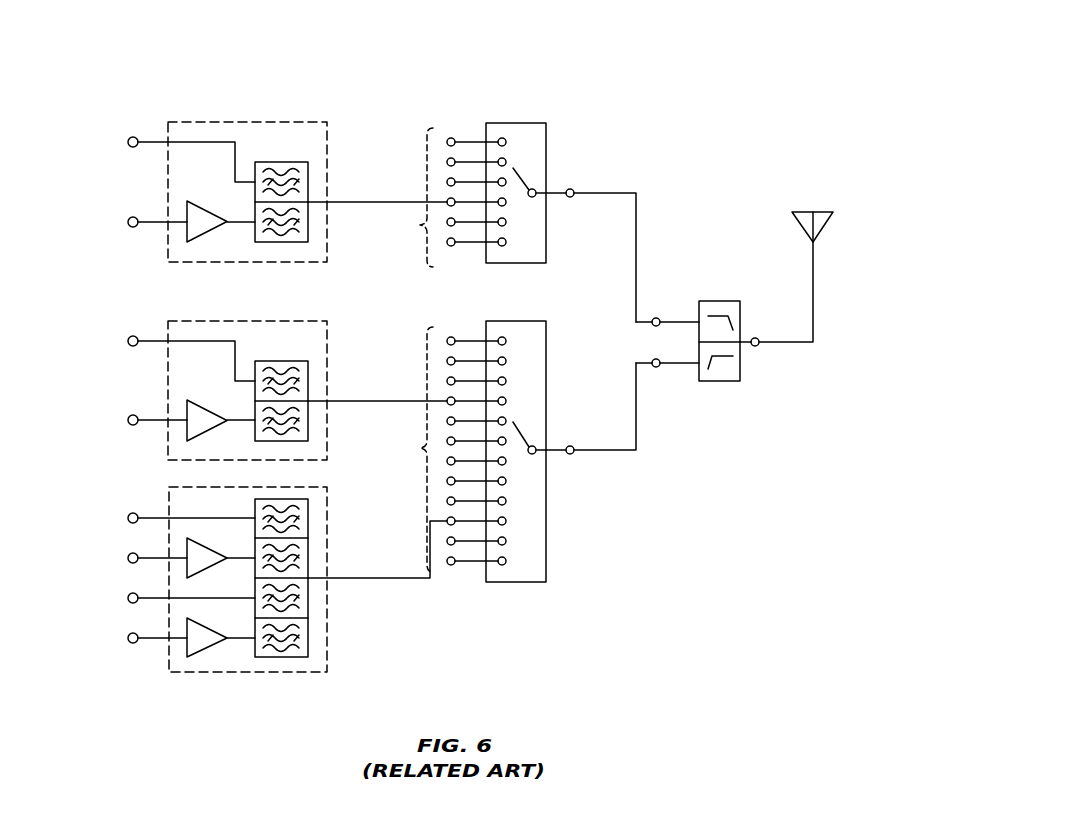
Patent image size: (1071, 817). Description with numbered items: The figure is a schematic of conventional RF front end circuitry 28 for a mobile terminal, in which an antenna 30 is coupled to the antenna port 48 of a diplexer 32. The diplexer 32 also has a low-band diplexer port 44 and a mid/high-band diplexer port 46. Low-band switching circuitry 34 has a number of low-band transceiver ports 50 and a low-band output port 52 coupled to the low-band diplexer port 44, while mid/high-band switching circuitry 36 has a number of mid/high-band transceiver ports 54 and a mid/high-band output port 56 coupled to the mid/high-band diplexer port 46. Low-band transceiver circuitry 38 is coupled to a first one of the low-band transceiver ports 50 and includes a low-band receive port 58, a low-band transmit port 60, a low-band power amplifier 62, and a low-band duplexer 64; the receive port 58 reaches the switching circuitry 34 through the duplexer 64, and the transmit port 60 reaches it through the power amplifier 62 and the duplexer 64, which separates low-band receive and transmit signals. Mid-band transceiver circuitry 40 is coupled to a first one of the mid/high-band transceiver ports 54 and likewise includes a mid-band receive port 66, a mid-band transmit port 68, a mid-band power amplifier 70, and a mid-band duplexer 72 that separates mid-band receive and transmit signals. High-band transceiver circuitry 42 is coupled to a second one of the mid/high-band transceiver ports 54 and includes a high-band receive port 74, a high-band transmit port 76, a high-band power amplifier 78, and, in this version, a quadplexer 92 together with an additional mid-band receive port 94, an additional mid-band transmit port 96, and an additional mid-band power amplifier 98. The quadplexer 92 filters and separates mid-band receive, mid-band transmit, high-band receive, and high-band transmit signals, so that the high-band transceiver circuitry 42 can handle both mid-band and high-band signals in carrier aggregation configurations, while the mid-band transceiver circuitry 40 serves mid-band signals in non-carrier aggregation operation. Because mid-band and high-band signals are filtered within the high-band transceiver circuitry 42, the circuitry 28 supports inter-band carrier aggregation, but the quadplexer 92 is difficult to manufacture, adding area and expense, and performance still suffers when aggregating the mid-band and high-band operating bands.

The conventional RF front end circuitry 28 is at (642, 72).
The antenna 30 is at (818, 212).
The diplexer 32 is at (712, 381).
The low-band switching circuitry 34 is at (513, 123).
The mid/high-band switching circuitry 36 is at (513, 321).
The low-band transceiver circuitry 38 is at (280, 122).
The mid-band transceiver circuitry 40 is at (280, 321).
The high-band transceiver circuitry 42 is at (328, 650).
The low-band diplexer port 44 is at (656, 317).
The mid/high-band diplexer port 46 is at (657, 368).
The antenna port 48 is at (757, 337).
The low-band transceiver ports 50 is at (420, 225).
The low-band output port 52 is at (570, 188).
The mid/high-band transceiver ports 54 is at (420, 448).
The mid/high-band output port 56 is at (571, 445).
The low-band receive port 58 is at (126, 139).
The low-band transmit port 60 is at (126, 219).
The low-band power amplifier 62 is at (206, 210).
The low-band duplexer 64 is at (270, 162).
The mid-band receive port 66 is at (126, 338).
The mid-band transmit port 68 is at (126, 417).
The mid-band power amplifier 70 is at (206, 409).
The mid-band duplexer 72 is at (270, 361).
The high-band receive port 74 is at (126, 595).
The high-band transmit port 76 is at (126, 635).
The high-band power amplifier 78 is at (206, 626).
The quadplexer 92 is at (283, 657).
The additional mid-band receive port 94 is at (126, 515).
The additional mid-band transmit port 96 is at (126, 555).
The additional mid-band power amplifier 98 is at (206, 547).